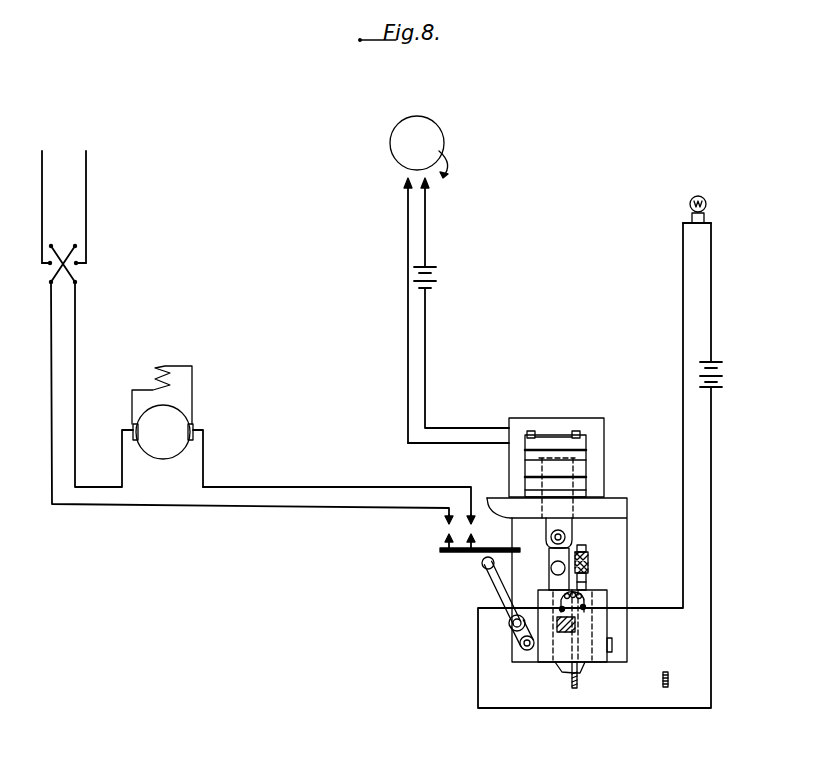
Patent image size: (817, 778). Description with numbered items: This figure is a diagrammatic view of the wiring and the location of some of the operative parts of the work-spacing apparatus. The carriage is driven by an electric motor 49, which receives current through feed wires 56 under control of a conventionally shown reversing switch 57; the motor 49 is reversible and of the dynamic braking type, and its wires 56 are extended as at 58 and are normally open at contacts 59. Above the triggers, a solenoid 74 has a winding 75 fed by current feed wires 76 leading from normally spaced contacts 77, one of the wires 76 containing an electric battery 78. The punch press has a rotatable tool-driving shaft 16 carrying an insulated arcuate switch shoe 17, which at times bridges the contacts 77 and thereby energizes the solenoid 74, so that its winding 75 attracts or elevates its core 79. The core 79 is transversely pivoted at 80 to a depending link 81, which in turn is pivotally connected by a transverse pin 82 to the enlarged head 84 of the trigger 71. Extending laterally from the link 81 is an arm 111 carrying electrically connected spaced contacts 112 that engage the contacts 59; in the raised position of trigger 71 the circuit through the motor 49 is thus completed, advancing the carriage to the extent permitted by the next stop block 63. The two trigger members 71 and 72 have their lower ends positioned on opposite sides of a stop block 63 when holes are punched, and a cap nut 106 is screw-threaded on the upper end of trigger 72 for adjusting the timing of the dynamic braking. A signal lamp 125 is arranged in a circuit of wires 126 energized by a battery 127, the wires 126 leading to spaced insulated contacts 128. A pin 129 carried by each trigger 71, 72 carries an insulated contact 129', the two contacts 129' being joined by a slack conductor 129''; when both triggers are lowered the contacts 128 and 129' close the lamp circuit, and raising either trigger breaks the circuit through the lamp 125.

The feed wires 56 is at (85, 152).
The reversing switch 57 is at (88, 266).
The electric motor 49 is at (178, 447).
The extended wires 58 is at (307, 507).
The contacts 59 is at (446, 524).
The spaced contacts 112 is at (447, 540).
The arm 111 is at (480, 553).
The tool-driving shaft 16 is at (417, 143).
The arcuate switch shoe 17 is at (462, 167).
The contacts 77 is at (423, 183).
The electric battery 78 is at (442, 280).
The current feed wires 76 is at (408, 367).
The solenoid 74 is at (575, 421).
The winding 75 is at (575, 453).
The core 79 is at (575, 479).
The pivot 80 is at (566, 537).
The depending link 81 is at (555, 552).
The transverse pin 82 is at (551, 568).
The enlarged head 84 is at (548, 585).
The cap nut 106 is at (589, 560).
The pin 129 is at (508, 603).
The contacts 129' is at (559, 595).
The slack conductor 129'' is at (625, 577).
The spaced contacts 128 is at (561, 609).
The trigger member 71 is at (563, 666).
The trigger member 72 is at (588, 668).
The stop block 63 is at (660, 681).
The lamp 125 is at (707, 204).
The battery 127 is at (727, 377).
The wires 126 is at (683, 445).